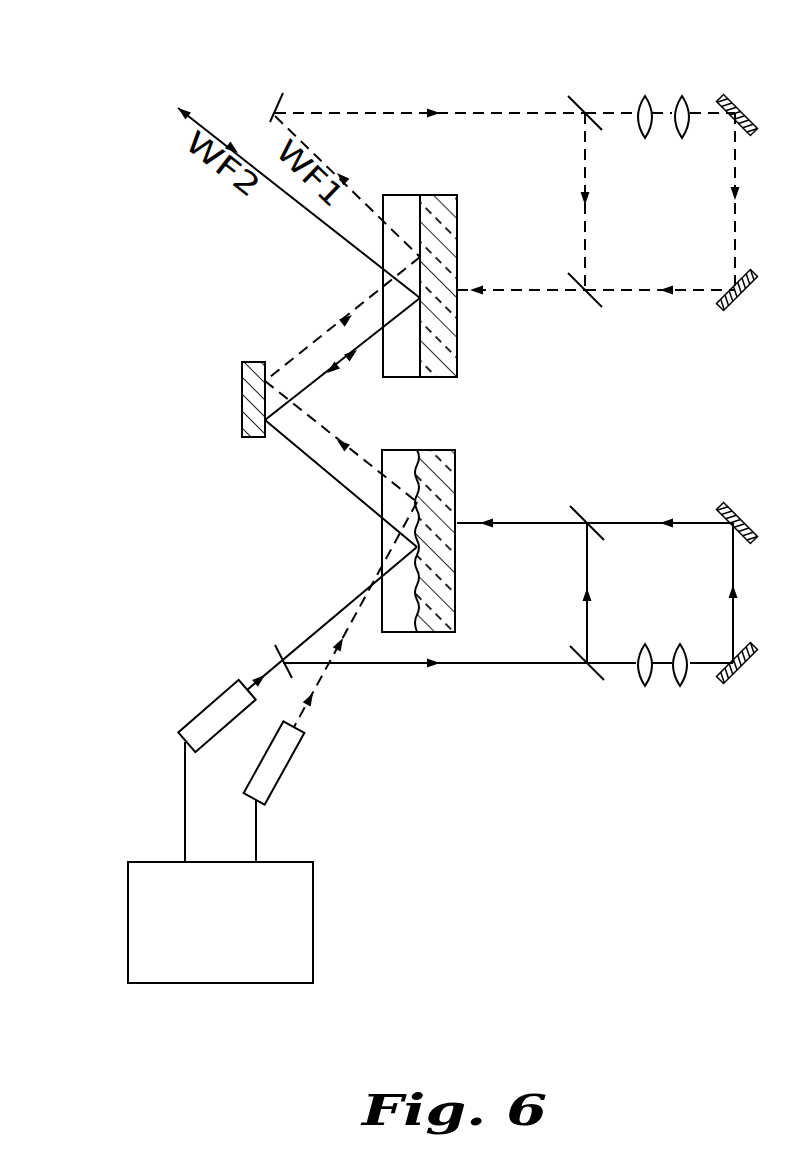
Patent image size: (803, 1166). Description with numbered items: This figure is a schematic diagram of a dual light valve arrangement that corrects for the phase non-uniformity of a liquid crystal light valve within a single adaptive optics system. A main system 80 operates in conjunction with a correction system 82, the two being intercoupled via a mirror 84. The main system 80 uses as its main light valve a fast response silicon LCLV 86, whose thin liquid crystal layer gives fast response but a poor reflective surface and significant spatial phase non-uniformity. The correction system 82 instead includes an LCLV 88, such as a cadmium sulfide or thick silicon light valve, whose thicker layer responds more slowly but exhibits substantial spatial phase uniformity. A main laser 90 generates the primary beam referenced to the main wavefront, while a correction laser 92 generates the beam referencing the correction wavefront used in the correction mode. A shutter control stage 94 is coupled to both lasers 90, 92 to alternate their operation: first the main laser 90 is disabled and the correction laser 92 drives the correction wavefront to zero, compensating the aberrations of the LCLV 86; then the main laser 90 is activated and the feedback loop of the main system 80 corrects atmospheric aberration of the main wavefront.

The main system 80 is at (634, 484).
The correction system 82 is at (639, 65).
The mirror 84 is at (250, 362).
The fast response silicon LCLV 86 is at (456, 497).
The LCLV 88 is at (458, 222).
The main laser 90 is at (217, 698).
The correction laser 92 is at (296, 753).
The shutter control stage 94 is at (158, 862).